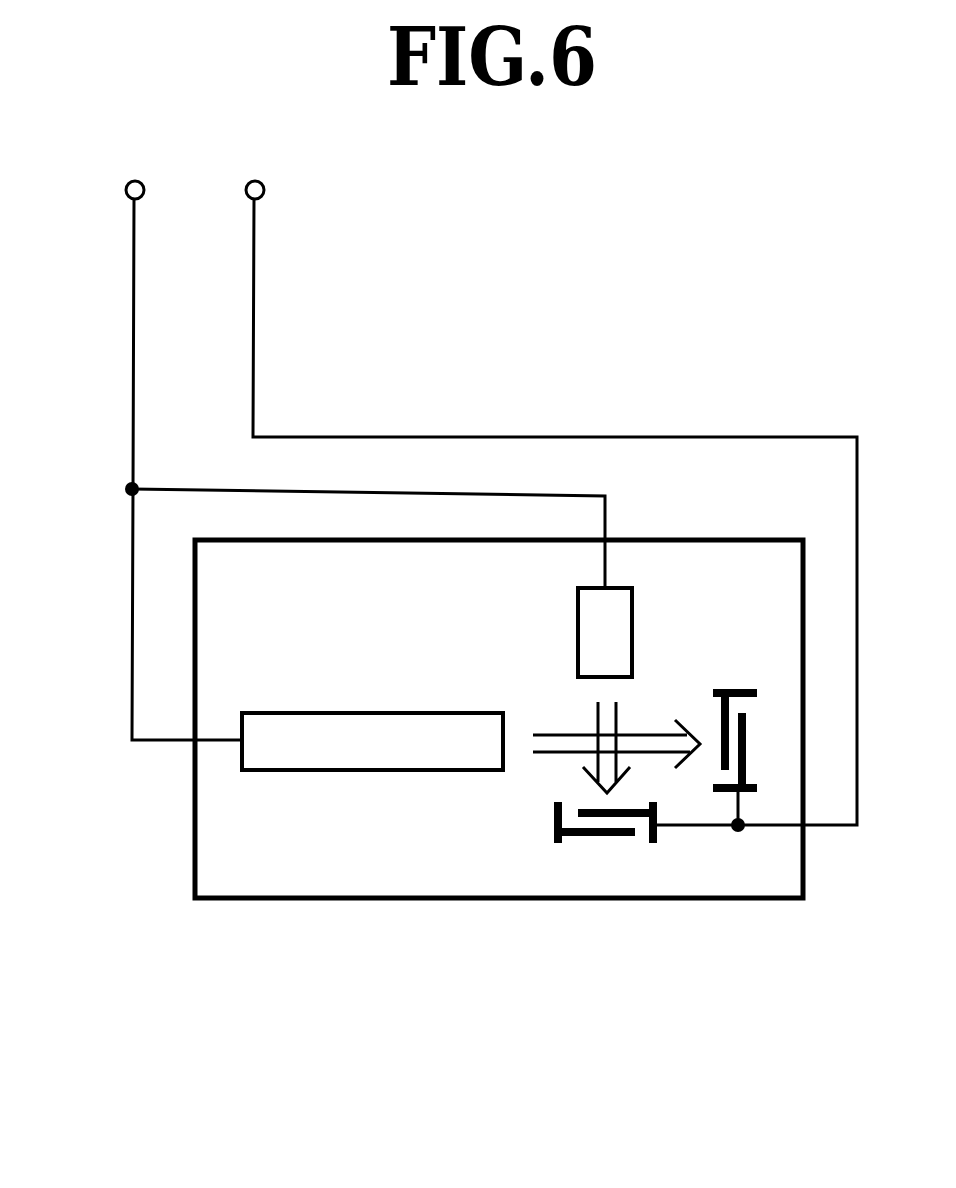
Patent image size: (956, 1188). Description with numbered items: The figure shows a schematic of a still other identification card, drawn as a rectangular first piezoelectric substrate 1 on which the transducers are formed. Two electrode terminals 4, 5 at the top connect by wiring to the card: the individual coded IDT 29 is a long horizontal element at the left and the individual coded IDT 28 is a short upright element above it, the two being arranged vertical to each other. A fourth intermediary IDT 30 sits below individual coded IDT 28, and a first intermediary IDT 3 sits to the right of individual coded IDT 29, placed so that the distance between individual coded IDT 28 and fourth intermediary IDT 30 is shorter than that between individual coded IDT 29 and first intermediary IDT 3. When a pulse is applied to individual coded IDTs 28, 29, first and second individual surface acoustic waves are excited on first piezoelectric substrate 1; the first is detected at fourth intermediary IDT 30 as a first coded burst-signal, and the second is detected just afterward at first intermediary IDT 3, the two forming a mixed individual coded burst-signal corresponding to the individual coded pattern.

The first piezoelectric substrate 1 is at (213, 860).
The first intermediary IDT 3 is at (748, 724).
The electrode terminal 4 is at (341, 450).
The electrode terminal 5 is at (551, 496).
The individual coded IDT 28 is at (617, 632).
The individual coded IDT 29 is at (322, 755).
The fourth intermediary IDT 30 is at (570, 841).